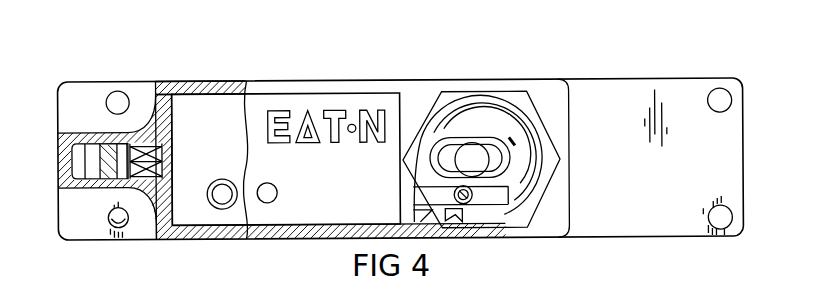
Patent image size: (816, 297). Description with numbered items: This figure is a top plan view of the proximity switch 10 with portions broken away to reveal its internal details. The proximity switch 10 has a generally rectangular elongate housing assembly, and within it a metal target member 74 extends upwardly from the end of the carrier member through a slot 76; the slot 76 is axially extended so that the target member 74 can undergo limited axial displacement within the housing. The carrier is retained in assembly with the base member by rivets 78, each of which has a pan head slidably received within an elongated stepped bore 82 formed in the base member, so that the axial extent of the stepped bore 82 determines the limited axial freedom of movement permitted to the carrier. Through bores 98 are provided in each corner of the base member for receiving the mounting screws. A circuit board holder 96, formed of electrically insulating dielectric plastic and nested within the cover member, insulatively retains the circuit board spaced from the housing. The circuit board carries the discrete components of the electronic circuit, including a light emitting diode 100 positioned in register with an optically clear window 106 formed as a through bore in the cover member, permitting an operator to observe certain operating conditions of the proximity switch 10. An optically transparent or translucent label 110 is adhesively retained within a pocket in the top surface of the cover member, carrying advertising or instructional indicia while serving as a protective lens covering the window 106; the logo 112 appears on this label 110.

The proximity switch 10 is at (295, 62).
The target member 74 is at (100, 150).
The slot 76 is at (88, 168).
The rivets 78 is at (470, 156).
The elongated stepped bore 82 is at (498, 148).
The circuit board holder 96 is at (198, 92).
The through bores 98 is at (126, 231).
The light emitting diode 100 is at (222, 194).
The window 106 is at (267, 193).
The label 110 is at (328, 207).
The logo 112 is at (363, 106).